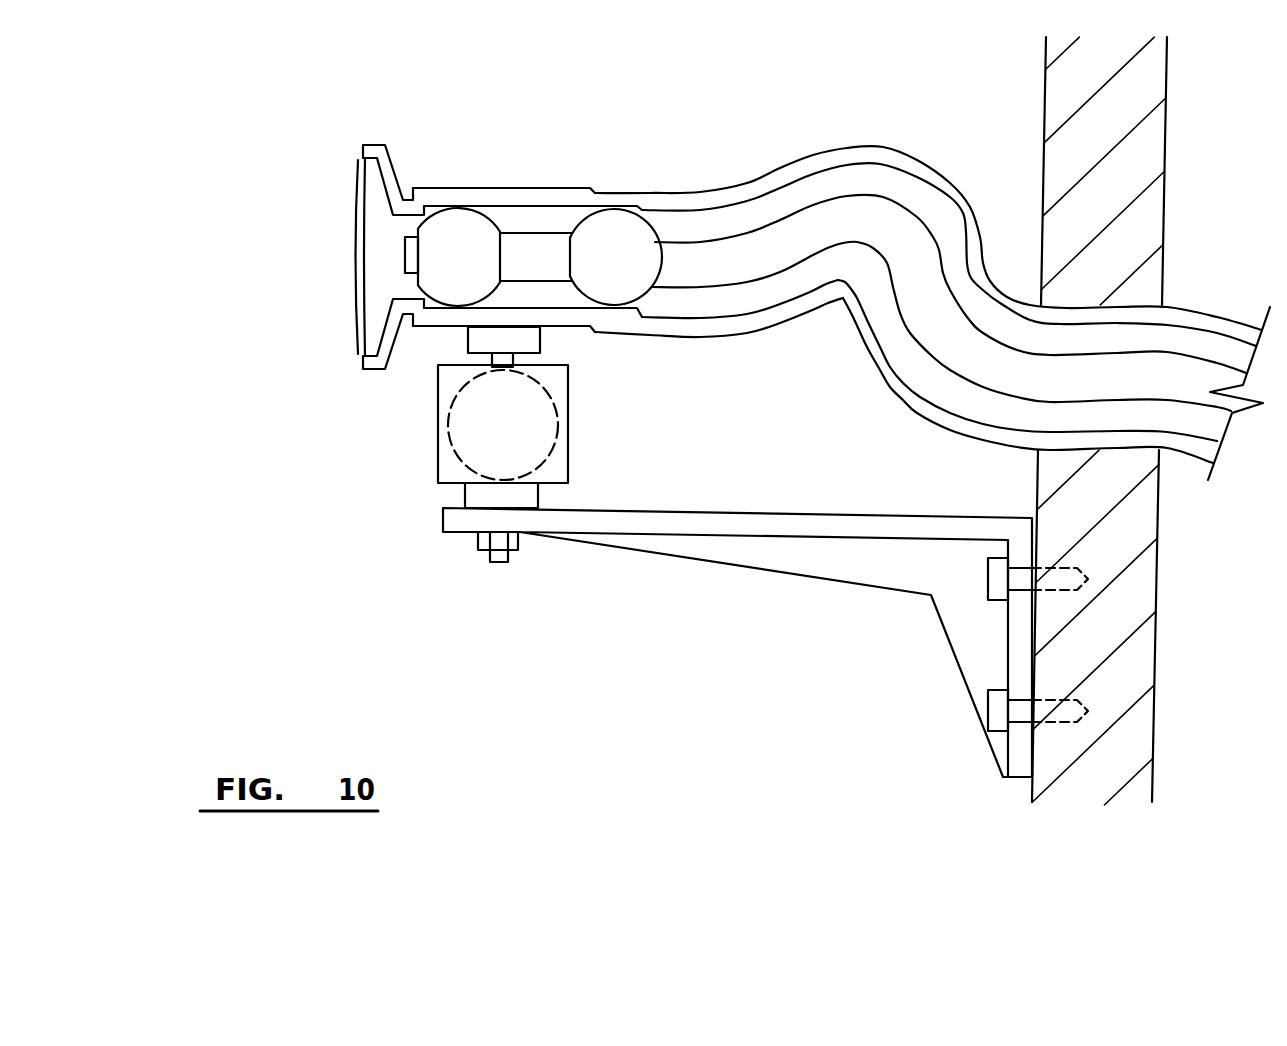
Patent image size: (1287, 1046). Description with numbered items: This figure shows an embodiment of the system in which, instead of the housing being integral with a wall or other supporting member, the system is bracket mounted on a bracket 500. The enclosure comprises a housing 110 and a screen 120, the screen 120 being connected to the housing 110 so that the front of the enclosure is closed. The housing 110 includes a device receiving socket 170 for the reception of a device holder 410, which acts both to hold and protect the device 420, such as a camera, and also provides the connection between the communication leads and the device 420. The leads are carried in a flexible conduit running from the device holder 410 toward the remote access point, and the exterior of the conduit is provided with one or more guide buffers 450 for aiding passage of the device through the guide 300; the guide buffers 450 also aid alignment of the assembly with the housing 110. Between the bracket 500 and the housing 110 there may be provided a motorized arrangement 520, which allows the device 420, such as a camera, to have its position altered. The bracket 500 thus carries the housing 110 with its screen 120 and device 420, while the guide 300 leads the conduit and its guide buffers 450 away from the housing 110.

The housing 110 is at (390, 173).
The screen 120 is at (355, 278).
The device receiving socket 170 is at (483, 194).
The guide 300 is at (830, 157).
The device holder 410 is at (450, 282).
The device 420 is at (408, 253).
The guide buffer 450 is at (612, 243).
The bracket 500 is at (866, 563).
The motorized arrangement 520 is at (437, 442).